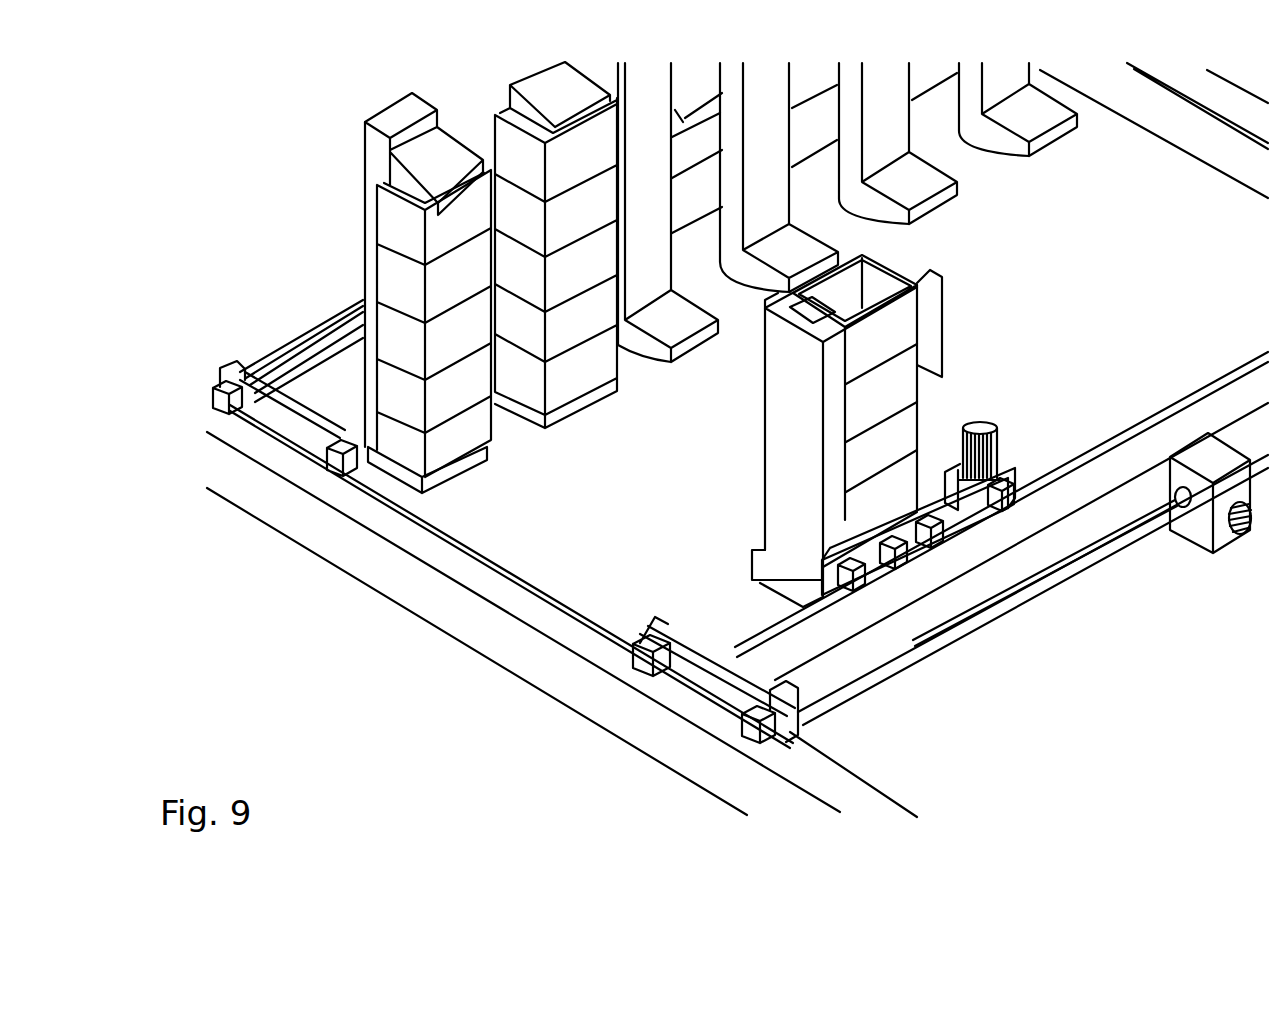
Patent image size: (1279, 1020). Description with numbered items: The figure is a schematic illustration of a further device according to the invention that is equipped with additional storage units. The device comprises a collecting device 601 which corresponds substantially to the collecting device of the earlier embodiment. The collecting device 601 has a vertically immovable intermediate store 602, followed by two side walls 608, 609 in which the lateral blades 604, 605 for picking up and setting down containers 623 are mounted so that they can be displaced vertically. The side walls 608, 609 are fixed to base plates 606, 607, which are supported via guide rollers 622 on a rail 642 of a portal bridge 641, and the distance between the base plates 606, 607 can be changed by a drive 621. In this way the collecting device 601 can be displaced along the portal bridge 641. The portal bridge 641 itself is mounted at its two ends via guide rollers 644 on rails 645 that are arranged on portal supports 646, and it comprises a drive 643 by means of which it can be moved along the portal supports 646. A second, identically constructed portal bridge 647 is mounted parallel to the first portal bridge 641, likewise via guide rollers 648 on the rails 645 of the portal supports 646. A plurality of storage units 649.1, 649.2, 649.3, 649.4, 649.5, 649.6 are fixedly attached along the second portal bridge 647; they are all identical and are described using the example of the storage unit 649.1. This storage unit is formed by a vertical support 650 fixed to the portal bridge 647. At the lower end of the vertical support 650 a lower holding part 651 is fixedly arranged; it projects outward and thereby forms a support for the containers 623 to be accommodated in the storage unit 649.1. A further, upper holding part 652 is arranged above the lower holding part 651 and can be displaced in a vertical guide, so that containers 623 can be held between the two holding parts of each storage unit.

The collecting device 601 is at (801, 431).
The intermediate store 602 is at (753, 431).
The lateral blade 604 is at (765, 328).
The lateral blade 605 is at (943, 281).
The base plate 606 is at (748, 577).
The base plate 607 is at (970, 430).
The side wall 608 is at (780, 490).
The side wall 609 is at (933, 368).
The drive 621 is at (1000, 452).
The guide rollers 622 is at (1017, 476).
The containers 623 is at (915, 338).
The portal bridge 641 is at (963, 597).
The rail 642 is at (1130, 427).
The drive 643 is at (1197, 527).
The guide rollers 644 is at (793, 740).
The rails 645 is at (520, 577).
The portal supports 646 is at (507, 660).
The second portal bridge 647 is at (317, 353).
The guide rollers 648 is at (230, 410).
The storage unit 649.1 is at (342, 172).
The storage unit 649.2 is at (581, 425).
The storage unit 649.3 is at (687, 362).
The storage unit 649.4 is at (800, 221).
The storage unit 649.5 is at (948, 218).
The storage unit 649.6 is at (1054, 156).
The vertical support 650 is at (370, 225).
The lower holding part 651 is at (457, 478).
The upper holding part 652 is at (447, 150).